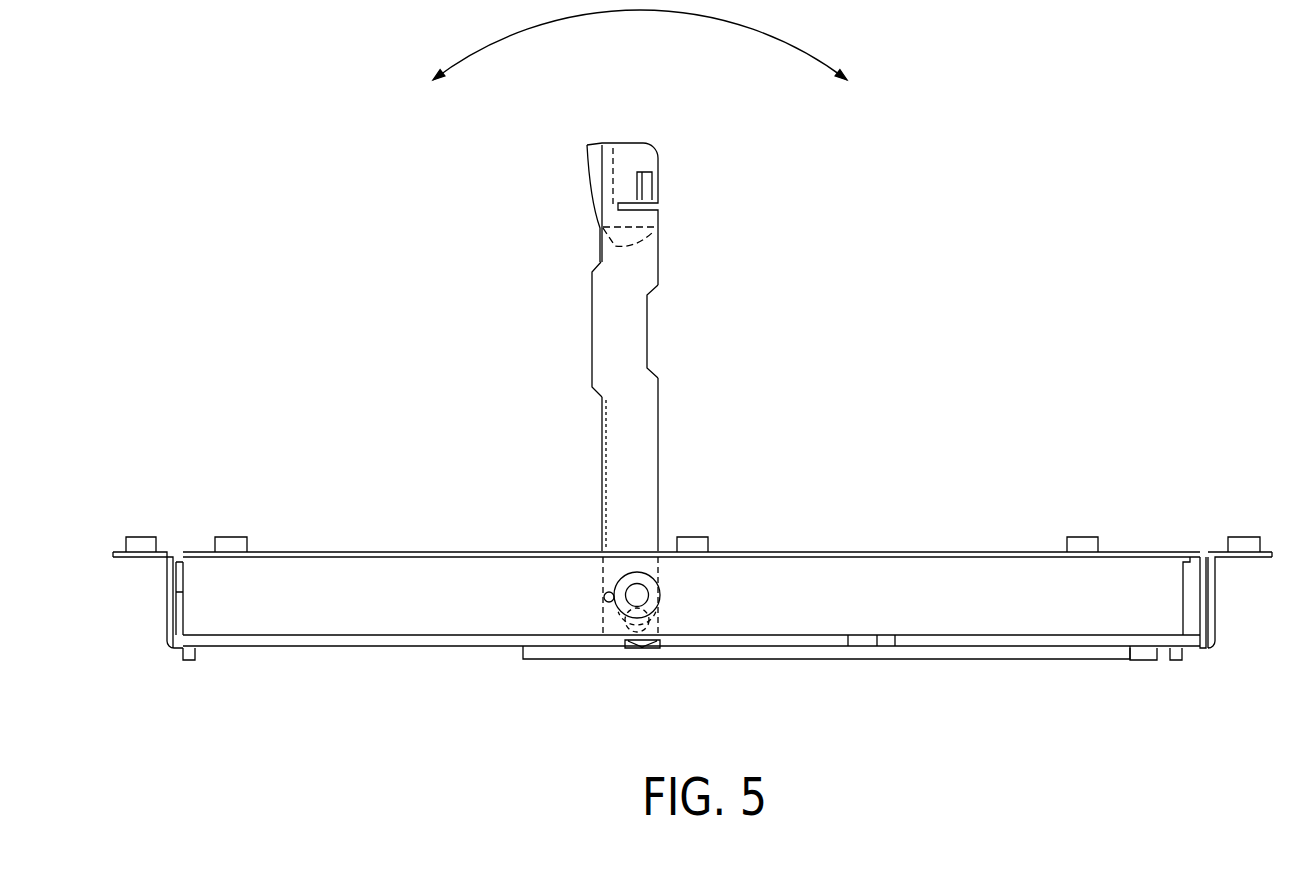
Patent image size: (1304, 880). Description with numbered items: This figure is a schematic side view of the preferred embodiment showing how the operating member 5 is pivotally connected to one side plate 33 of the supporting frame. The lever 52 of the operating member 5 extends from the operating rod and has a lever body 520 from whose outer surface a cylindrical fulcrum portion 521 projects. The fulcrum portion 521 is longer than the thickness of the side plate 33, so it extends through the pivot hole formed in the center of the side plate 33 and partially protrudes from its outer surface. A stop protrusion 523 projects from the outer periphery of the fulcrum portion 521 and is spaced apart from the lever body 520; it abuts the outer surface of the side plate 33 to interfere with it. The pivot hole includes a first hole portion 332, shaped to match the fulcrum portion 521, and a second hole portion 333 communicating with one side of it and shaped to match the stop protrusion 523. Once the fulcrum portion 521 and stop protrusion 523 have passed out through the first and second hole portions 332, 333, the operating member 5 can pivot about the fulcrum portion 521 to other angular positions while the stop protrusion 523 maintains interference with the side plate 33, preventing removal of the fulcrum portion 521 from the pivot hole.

The operating member 5 is at (645, 128).
The side plate 33 is at (1042, 522).
The lever 52 is at (652, 330).
The lever body 520 is at (643, 437).
The fulcrum portion 521 is at (657, 606).
The stop protrusion 523 is at (607, 600).
The first hole portion 332 is at (668, 592).
The second hole portion 333 is at (597, 595).